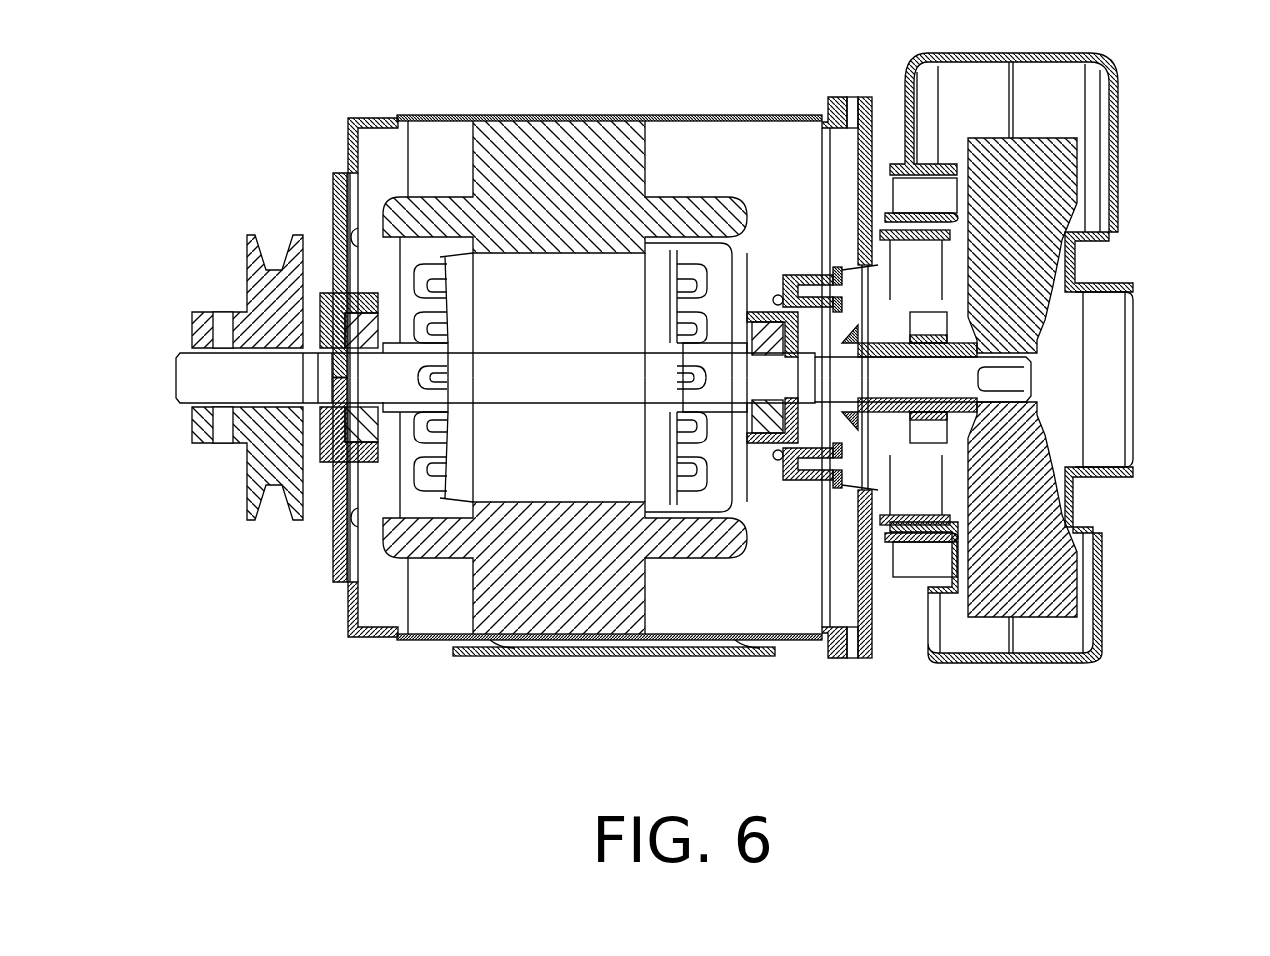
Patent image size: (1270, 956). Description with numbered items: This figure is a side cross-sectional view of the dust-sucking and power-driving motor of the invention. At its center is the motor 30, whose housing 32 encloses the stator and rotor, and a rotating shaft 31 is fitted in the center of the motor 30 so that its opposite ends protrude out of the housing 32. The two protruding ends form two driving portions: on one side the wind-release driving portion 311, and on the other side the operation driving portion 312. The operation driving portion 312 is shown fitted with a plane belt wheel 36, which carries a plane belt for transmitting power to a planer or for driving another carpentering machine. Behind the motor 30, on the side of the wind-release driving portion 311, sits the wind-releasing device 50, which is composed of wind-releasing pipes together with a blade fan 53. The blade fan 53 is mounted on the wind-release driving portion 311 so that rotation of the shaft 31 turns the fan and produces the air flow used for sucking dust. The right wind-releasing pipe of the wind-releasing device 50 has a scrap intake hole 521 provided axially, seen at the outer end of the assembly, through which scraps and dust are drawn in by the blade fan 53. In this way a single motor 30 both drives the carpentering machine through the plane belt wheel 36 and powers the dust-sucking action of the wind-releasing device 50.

The motor 30 is at (603, 117).
The rotating shaft 31 is at (503, 462).
The wind-release driving portion 311 is at (893, 378).
The operation driving portion 312 is at (403, 379).
The housing 32 is at (692, 117).
The plane belt wheel 36 is at (260, 293).
The wind-releasing device 50 is at (1117, 92).
The scrap intake hole 521 is at (1115, 348).
The blade fan 53 is at (1027, 597).